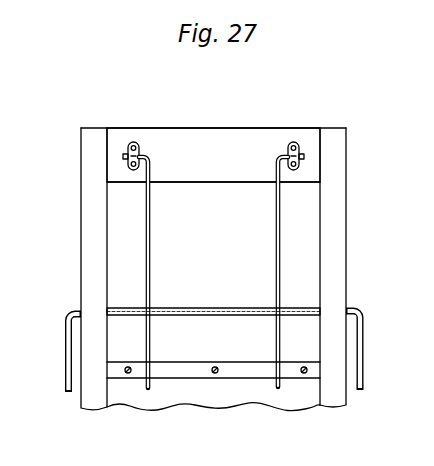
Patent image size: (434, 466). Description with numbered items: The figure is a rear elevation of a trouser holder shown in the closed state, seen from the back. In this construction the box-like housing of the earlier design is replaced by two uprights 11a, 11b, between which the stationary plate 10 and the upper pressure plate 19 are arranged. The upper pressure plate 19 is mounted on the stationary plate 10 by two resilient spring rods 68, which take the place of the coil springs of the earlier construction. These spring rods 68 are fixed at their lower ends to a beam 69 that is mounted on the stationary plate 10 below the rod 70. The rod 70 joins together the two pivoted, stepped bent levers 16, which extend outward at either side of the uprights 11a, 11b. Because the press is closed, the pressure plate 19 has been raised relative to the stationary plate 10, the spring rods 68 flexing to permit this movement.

The stationary plate 10 is at (118, 262).
The upright 11a is at (98, 222).
The upright 11b is at (330, 228).
The bent lever 16 is at (66, 362).
The upper pressure plate 19 is at (240, 147).
The resilient spring rod 68 is at (276, 262).
The beam 69 is at (255, 372).
The rod 70 is at (239, 311).